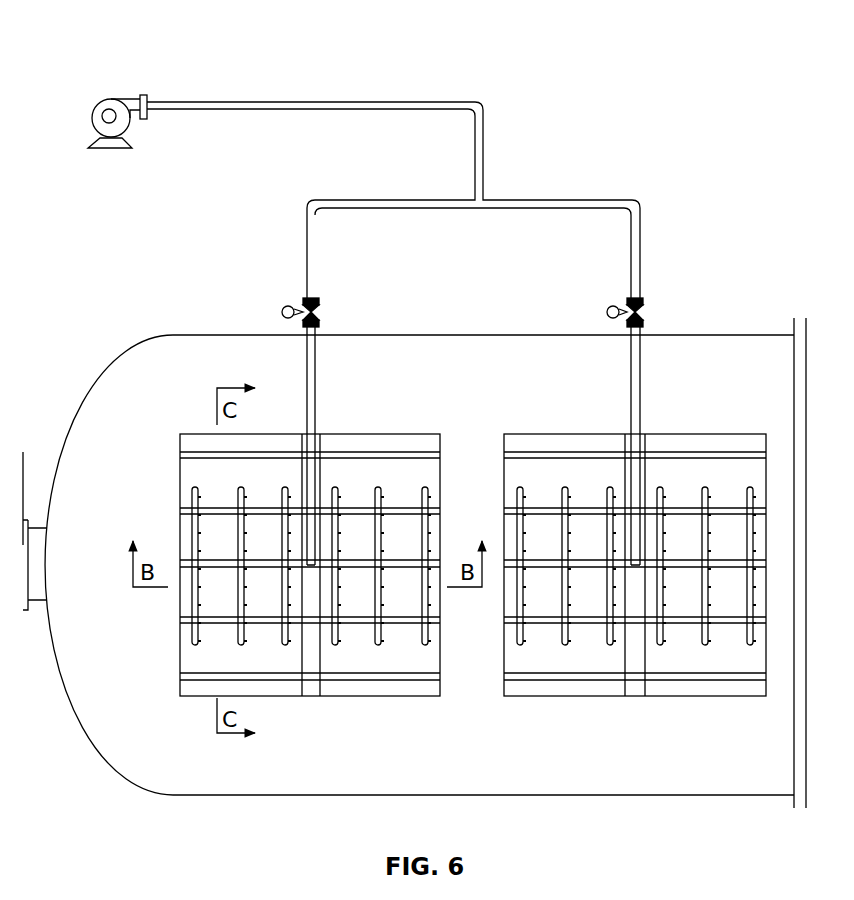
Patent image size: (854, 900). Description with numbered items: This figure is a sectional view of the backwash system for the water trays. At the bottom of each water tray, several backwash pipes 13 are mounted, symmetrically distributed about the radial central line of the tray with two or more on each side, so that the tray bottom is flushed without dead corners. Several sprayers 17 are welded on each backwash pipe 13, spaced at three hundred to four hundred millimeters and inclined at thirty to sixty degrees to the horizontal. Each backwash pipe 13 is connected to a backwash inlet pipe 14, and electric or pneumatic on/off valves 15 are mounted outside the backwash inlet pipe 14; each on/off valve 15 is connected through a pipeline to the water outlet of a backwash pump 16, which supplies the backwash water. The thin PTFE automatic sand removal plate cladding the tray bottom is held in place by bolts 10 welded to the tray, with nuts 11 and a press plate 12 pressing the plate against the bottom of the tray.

The bolts 10 is at (404, 677).
The nuts 11 is at (356, 727).
The press plate 12 is at (414, 447).
The backwash pipe 13 is at (343, 482).
The backwash inlet pipe 14 is at (316, 416).
The electric or pneumatic on/off valve 15 is at (320, 309).
The backwash pump 16 is at (111, 117).
The sprayer 17 is at (529, 491).